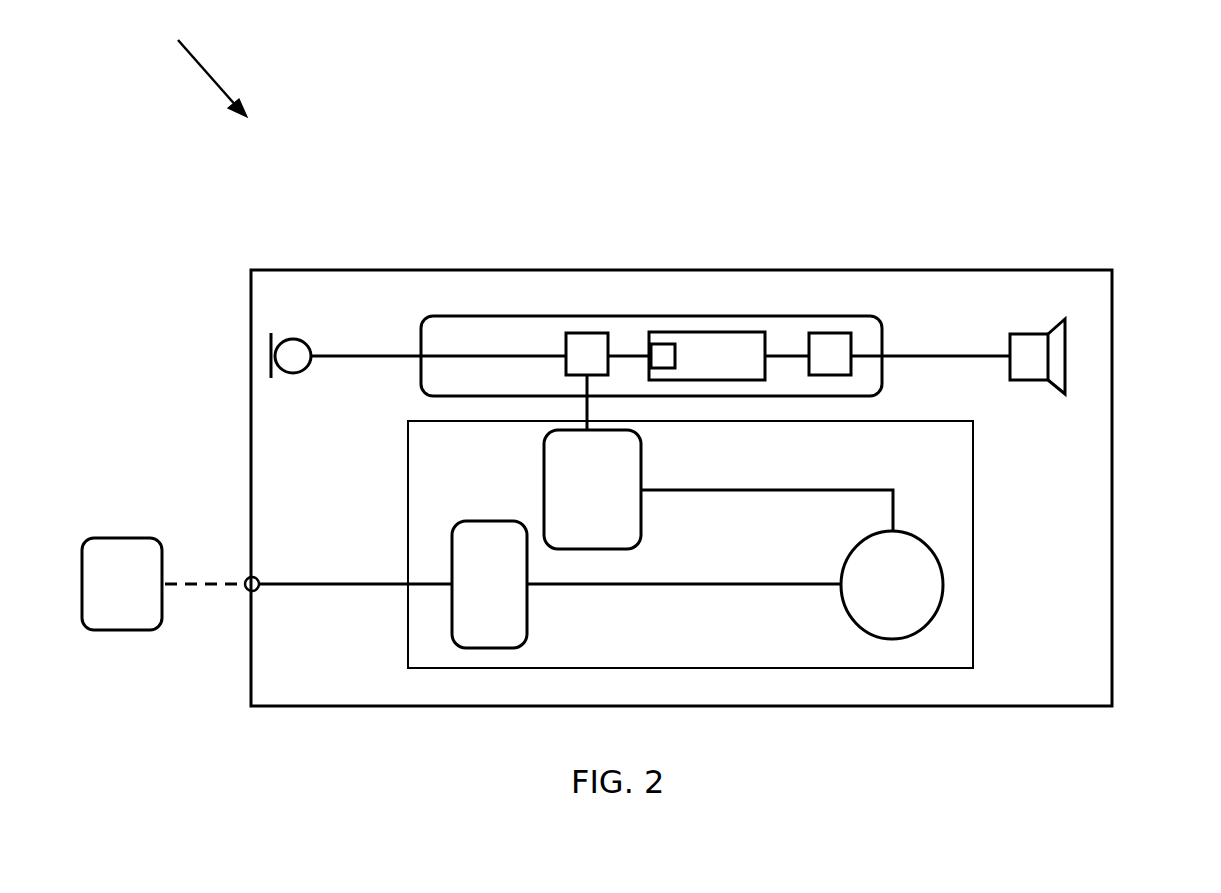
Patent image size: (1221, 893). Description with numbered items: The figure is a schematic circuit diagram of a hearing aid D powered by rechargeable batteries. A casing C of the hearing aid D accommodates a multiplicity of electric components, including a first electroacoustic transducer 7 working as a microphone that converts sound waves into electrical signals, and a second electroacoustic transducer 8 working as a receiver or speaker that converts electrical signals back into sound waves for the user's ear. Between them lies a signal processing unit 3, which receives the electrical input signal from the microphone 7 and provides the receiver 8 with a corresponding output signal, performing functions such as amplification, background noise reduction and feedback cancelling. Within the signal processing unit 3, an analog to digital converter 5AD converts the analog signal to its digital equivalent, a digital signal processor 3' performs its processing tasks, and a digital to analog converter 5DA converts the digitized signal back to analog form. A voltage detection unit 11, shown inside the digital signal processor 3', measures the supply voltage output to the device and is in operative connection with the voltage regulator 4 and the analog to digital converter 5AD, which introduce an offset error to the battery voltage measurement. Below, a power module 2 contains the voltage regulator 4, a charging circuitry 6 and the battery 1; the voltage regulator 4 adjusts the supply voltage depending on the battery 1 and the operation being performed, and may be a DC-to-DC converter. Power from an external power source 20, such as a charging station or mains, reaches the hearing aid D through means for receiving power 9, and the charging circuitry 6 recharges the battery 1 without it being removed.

The battery 1 is at (933, 585).
The power module 2 is at (757, 670).
The signal processing unit 3 is at (651, 275).
The digital signal processor 3' is at (707, 278).
The voltage regulator 4 is at (545, 472).
The analog to digital converter 5AD is at (588, 345).
The digital to analog converter 5DA is at (835, 336).
The charging circuitry 6 is at (489, 600).
The first electroacoustic transducer 7 is at (283, 330).
The second electroacoustic transducer 8 is at (1025, 334).
The means for receiving power 9 is at (246, 589).
The voltage detection unit 11 is at (664, 340).
The external power source 20 is at (120, 537).
The casing C is at (1112, 522).
The hearing aid D is at (204, 72).